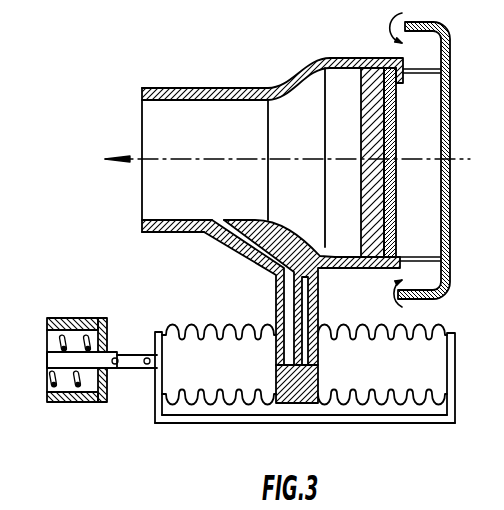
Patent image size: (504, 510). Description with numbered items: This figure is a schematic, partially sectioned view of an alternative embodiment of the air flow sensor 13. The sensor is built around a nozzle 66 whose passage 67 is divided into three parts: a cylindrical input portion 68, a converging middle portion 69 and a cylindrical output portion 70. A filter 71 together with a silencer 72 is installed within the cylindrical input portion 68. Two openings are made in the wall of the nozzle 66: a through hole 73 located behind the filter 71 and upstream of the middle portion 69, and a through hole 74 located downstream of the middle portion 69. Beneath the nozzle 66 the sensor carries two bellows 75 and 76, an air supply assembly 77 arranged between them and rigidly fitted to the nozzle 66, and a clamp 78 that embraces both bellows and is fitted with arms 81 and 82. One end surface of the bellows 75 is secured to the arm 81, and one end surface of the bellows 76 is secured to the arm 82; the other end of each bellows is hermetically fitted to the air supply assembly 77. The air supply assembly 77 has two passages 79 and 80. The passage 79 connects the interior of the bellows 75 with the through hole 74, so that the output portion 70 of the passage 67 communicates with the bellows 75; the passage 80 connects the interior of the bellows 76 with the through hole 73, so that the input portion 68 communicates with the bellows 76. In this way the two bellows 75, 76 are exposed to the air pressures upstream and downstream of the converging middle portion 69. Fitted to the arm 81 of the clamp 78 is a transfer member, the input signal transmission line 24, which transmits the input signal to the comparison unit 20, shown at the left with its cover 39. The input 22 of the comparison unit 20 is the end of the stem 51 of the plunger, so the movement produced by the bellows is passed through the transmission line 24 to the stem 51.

The air flow sensor 13 is at (153, 87).
The output portion 70 is at (179, 118).
The nozzle 66 is at (246, 93).
The passage 67 is at (219, 156).
The middle portion 69 is at (298, 108).
The input portion 68 is at (335, 76).
The filter 71 is at (367, 63).
The silencer 72 is at (388, 63).
The through hole 73 is at (336, 268).
The through hole 74 is at (208, 233).
The bellows 75 is at (228, 380).
The bellows 76 is at (390, 378).
The air supply assembly 77 is at (296, 400).
The clamp 78 is at (350, 420).
The passage 79 is at (276, 360).
The passage 80 is at (316, 362).
The arm 81 is at (155, 424).
The arm 82 is at (449, 392).
The comparison unit 20 is at (57, 405).
The stem 51 is at (75, 328).
The cover 39 is at (100, 403).
The input 22 is at (112, 358).
The input signal transmission line 24 is at (130, 372).